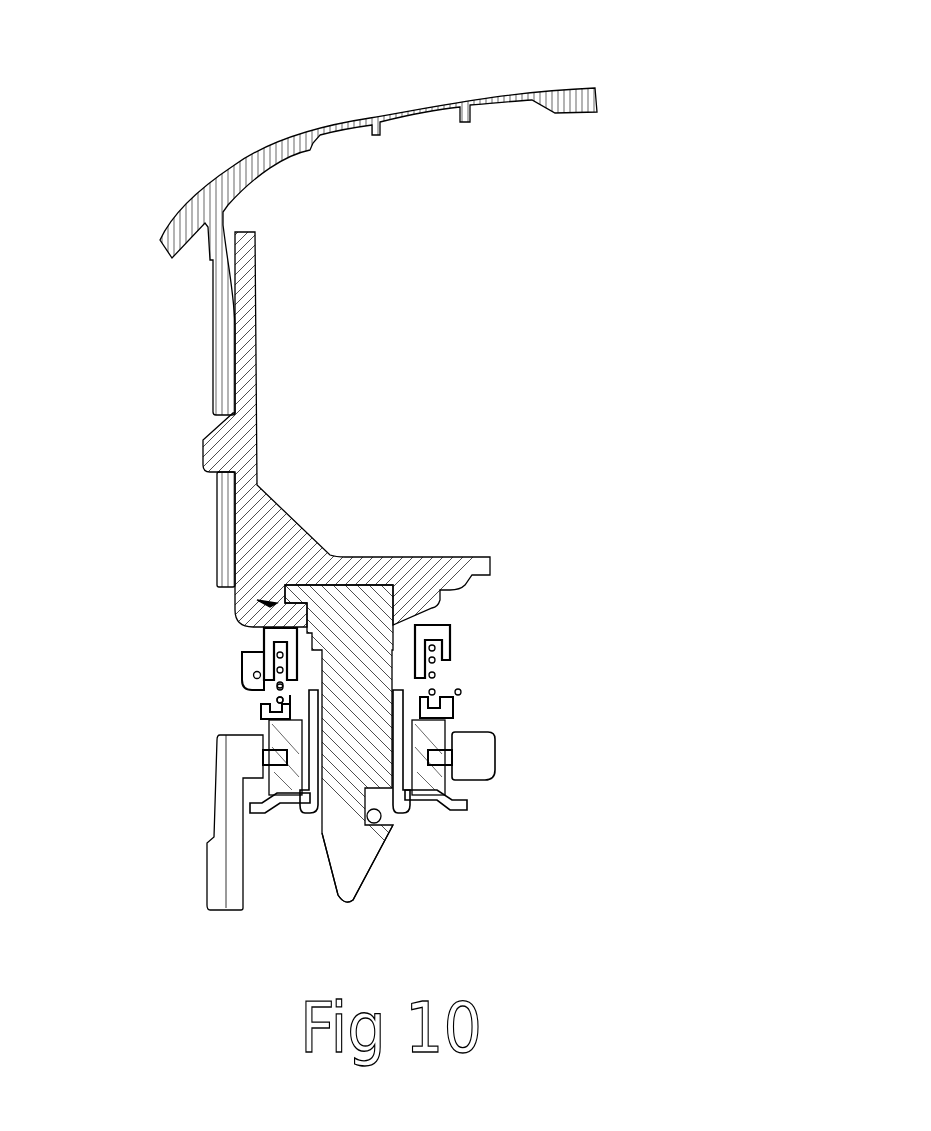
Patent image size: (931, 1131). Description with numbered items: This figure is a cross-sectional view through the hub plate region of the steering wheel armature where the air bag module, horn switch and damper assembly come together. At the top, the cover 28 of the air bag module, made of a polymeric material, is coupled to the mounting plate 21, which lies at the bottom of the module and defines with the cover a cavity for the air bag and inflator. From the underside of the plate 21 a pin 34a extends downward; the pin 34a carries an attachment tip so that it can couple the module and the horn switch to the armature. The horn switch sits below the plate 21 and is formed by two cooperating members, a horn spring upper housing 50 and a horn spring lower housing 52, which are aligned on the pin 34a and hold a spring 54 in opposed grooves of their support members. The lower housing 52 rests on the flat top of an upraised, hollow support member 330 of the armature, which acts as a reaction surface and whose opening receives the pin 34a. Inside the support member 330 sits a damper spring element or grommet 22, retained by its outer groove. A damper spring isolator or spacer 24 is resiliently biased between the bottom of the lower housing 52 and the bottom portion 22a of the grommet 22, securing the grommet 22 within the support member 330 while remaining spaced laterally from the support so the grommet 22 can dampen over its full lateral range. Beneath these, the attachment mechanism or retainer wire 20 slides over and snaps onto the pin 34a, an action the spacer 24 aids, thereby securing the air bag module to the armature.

The attachment mechanism 20 is at (379, 822).
The mounting plate 21 is at (278, 528).
The damper spring element 22 is at (290, 737).
The bottom portion of damper spring element 22a is at (310, 793).
The damper spring isolator 24 is at (417, 800).
The cover 28 is at (230, 165).
The pin 34a is at (337, 852).
The horn spring upper housing 50 is at (241, 660).
The horn spring lower housing 52 is at (267, 718).
The spring 54 is at (450, 677).
The support member 330 is at (203, 868).